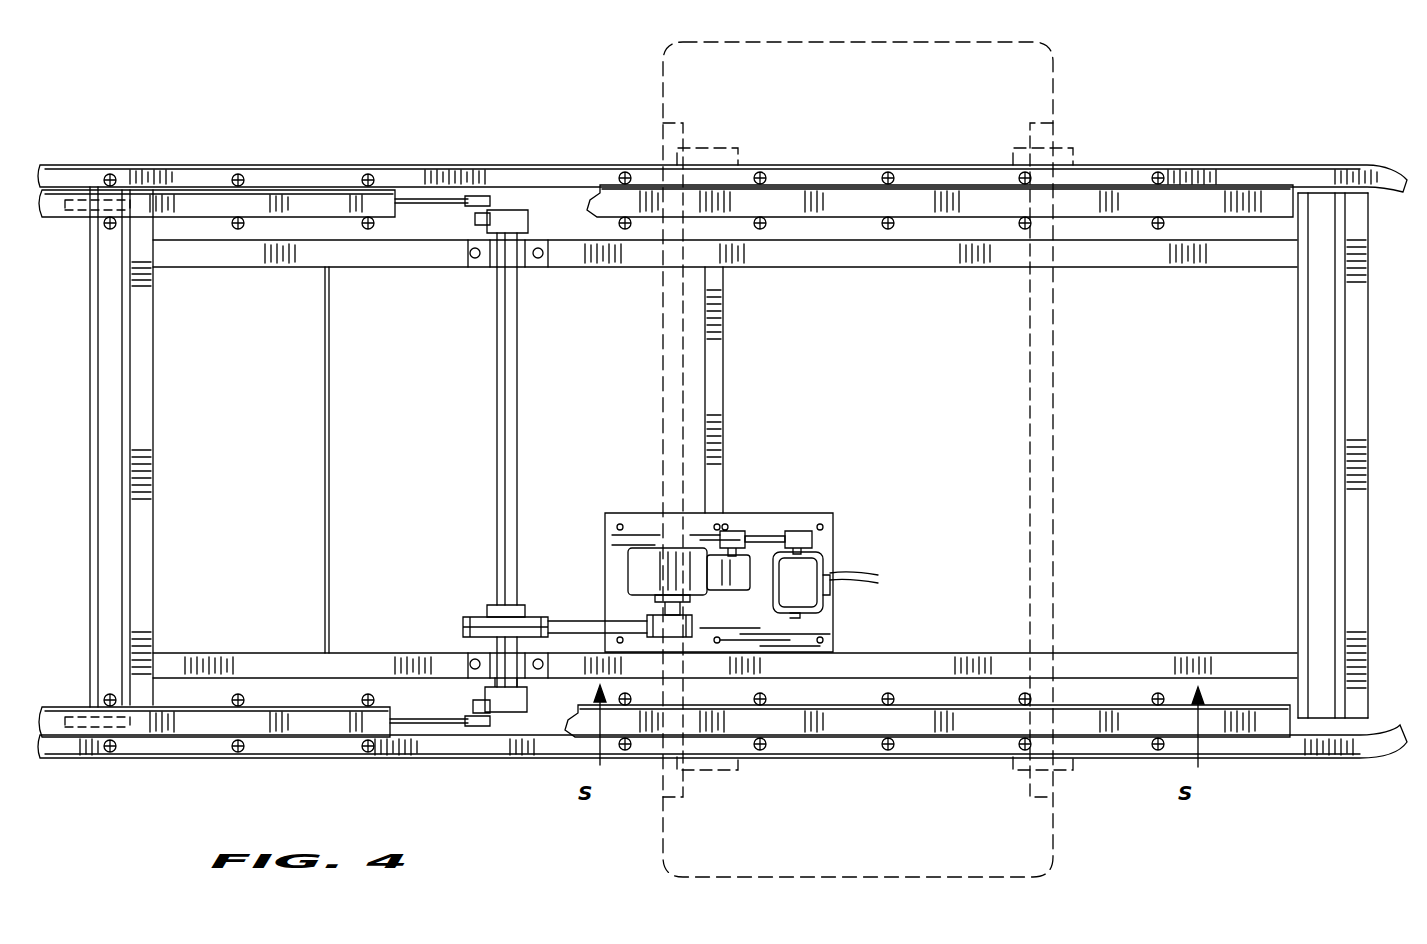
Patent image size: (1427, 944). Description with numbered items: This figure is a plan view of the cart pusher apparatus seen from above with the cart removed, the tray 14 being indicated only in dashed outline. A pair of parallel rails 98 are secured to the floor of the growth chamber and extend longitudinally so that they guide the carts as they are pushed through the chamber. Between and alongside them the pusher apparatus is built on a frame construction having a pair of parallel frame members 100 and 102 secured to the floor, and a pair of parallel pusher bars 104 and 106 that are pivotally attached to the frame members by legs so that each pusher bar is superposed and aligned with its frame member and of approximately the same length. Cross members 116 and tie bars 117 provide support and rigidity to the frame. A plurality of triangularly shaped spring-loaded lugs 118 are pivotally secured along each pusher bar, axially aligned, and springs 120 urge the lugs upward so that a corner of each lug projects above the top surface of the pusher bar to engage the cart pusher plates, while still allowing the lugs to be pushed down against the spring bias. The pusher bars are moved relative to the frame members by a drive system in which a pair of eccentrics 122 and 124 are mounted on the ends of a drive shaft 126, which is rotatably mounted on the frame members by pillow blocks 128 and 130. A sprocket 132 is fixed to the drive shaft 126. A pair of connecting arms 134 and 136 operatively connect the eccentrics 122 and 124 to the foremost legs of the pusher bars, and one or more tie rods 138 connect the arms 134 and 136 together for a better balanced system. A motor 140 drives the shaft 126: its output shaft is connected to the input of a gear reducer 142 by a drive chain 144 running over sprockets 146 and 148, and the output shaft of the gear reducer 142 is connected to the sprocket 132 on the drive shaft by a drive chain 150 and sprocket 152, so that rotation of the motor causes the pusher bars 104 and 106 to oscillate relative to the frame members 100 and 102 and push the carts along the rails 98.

The tray 14 is at (1033, 97).
The rail 98 is at (275, 165).
The frame member 100 is at (268, 665).
The frame member 102 is at (248, 250).
The pusher bar 104 is at (173, 737).
The pusher bar 106 is at (160, 185).
The cross member 116 is at (145, 410).
The tie bar 117 is at (130, 525).
The spring-loaded lug 118 is at (365, 190).
The spring 120 is at (1165, 185).
The eccentric 122 is at (530, 697).
The eccentric 124 is at (525, 208).
The drive shaft 126 is at (495, 515).
The pillow block 128 is at (465, 640).
The pillow block 130 is at (472, 262).
The sprocket 132 is at (540, 604).
The connecting arm 134 is at (446, 726).
The connecting arm 136 is at (445, 198).
The tie rod 138 is at (330, 440).
The motor 140 is at (805, 572).
The gear reducer 142 is at (640, 545).
The drive chain 144 is at (765, 532).
The sprocket 146 is at (805, 528).
The sprocket 148 is at (735, 530).
The drive chain 150 is at (578, 620).
The sprocket 152 is at (693, 628).